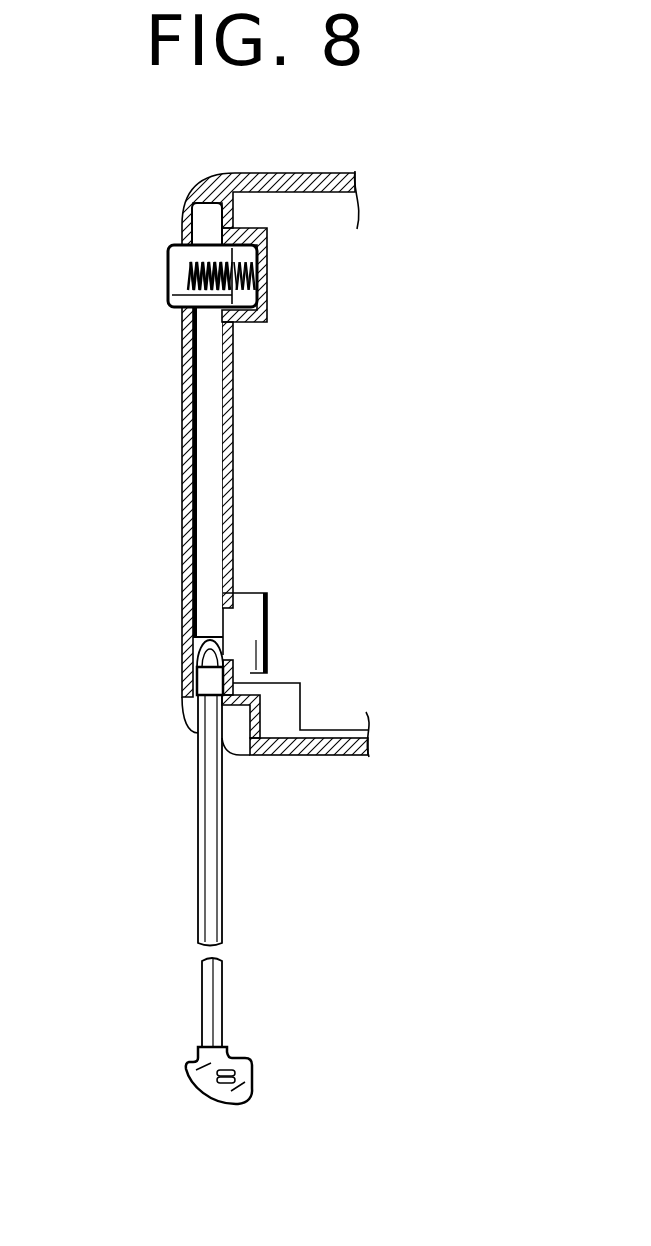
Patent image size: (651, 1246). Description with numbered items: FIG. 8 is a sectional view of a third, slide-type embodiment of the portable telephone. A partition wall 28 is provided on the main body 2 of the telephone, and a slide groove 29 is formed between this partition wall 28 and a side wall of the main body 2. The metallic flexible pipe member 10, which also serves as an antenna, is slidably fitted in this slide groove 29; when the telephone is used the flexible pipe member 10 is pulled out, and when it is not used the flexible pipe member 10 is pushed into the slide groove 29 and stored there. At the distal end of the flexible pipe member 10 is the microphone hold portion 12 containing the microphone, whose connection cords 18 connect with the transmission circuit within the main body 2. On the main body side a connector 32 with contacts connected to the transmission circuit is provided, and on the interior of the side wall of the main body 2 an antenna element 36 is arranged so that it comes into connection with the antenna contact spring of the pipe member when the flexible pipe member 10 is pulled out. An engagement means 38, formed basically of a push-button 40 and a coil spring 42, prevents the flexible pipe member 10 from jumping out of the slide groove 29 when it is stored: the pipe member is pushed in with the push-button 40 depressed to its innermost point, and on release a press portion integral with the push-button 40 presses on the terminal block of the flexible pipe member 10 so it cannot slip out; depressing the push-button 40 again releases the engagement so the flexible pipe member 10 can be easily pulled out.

The main body 2 is at (176, 403).
The flexible pipe member 10 is at (220, 837).
The microphone hold portion 12 is at (255, 1097).
The connection cords 18 is at (195, 638).
The partition wall 28 is at (233, 373).
The slide groove 29 is at (212, 447).
The connector 32 is at (268, 608).
The antenna element 36 is at (195, 458).
The engagement means 38 is at (158, 244).
The push-button 40 is at (168, 287).
The coil spring 42 is at (243, 278).